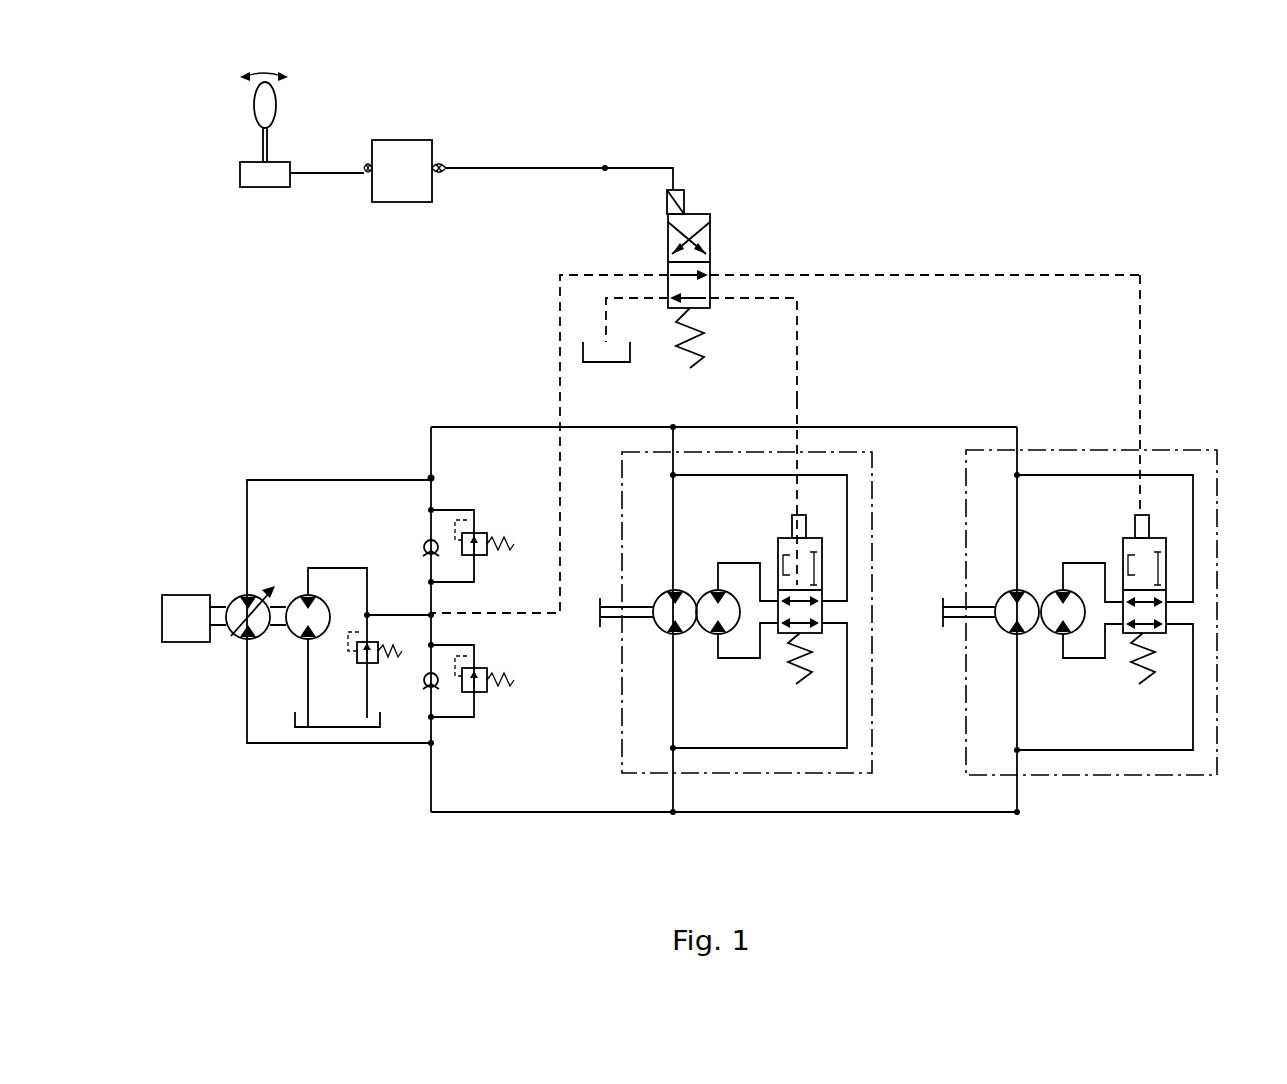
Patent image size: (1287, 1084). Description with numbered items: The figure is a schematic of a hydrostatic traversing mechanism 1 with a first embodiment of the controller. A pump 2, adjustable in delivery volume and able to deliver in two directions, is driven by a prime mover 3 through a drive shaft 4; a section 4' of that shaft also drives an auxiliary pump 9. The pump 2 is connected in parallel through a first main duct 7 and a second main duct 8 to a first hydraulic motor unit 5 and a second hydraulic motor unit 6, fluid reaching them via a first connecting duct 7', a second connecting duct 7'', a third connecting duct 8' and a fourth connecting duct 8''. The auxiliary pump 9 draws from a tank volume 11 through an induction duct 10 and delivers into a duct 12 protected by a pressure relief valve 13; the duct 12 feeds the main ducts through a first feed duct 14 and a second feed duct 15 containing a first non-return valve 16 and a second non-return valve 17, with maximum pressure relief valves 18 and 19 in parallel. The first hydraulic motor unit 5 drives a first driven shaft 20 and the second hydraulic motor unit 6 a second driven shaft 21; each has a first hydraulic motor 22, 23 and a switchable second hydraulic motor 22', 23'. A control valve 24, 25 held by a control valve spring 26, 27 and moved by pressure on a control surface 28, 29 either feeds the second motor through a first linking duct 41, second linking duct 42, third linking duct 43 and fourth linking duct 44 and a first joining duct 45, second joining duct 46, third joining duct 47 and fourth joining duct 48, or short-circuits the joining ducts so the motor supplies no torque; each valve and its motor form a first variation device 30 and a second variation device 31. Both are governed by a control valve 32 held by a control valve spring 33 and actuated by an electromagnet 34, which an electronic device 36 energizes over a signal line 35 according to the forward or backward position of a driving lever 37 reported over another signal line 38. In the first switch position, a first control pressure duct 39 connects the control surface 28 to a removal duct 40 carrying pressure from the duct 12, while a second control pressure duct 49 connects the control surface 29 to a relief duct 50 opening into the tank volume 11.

The hydrostatic traversing mechanism 1 is at (1214, 262).
The pump 2 is at (234, 628).
The prime mover 3 is at (164, 620).
The drive shaft 4 is at (218, 589).
The section of the drive shaft 4' is at (281, 644).
The first hydraulic motor unit 5 is at (1117, 581).
The second hydraulic motor unit 6 is at (747, 630).
The first main duct 7 is at (688, 838).
The first connecting duct 7' is at (1048, 830).
The second connecting duct 7'' is at (706, 830).
The second main duct 8 is at (683, 594).
The third connecting duct 8' is at (1035, 594).
The fourth connecting duct 8'' is at (691, 594).
The auxiliary pump 9 is at (295, 592).
The induction duct 10 is at (306, 694).
The tank volume 11 is at (330, 729).
The duct 12 is at (332, 567).
The pressure relief valve 13 is at (356, 662).
The first feed duct 14 is at (433, 626).
The second feed duct 15 is at (433, 492).
The first non-return valve 16 is at (428, 686).
The second non-return valve 17 is at (426, 542).
The maximum pressure relief valve 18 is at (490, 688).
The maximum pressure relief valve 19 is at (490, 553).
The first driven shaft 20 is at (952, 622).
The second driven shaft 21 is at (608, 622).
The first hydraulic motor 22 is at (1022, 653).
The second hydraulic motor 22' is at (1057, 574).
The first hydraulic motor 23 is at (680, 653).
The second hydraulic motor 23' is at (713, 574).
The control valve 24 is at (1178, 548).
The control valve 25 is at (834, 548).
The control valve spring 26 is at (1139, 686).
The control valve spring 27 is at (796, 686).
The control surface 28 is at (1159, 494).
The control surface 29 is at (816, 494).
The first variation device 30 is at (1121, 494).
The second variation device 31 is at (777, 494).
The control valve 32 is at (722, 237).
The control valve spring 33 is at (698, 337).
The electromagnet 34 is at (686, 200).
The signal line 35 is at (578, 166).
The electronic device 36 is at (407, 143).
The driving lever 37 is at (217, 149).
The signal line 38 is at (327, 176).
The first control pressure duct 39 is at (966, 271).
The removal duct 40 is at (556, 332).
The first linking duct 41 is at (1115, 752).
The second linking duct 42 is at (1066, 448).
The third linking duct 43 is at (770, 750).
The fourth linking duct 44 is at (722, 450).
The first joining duct 45 is at (1085, 660).
The second joining duct 46 is at (1085, 562).
The third joining duct 47 is at (740, 660).
The fourth joining duct 48 is at (740, 562).
The second control pressure duct 49 is at (800, 348).
The relief duct 50 is at (604, 322).